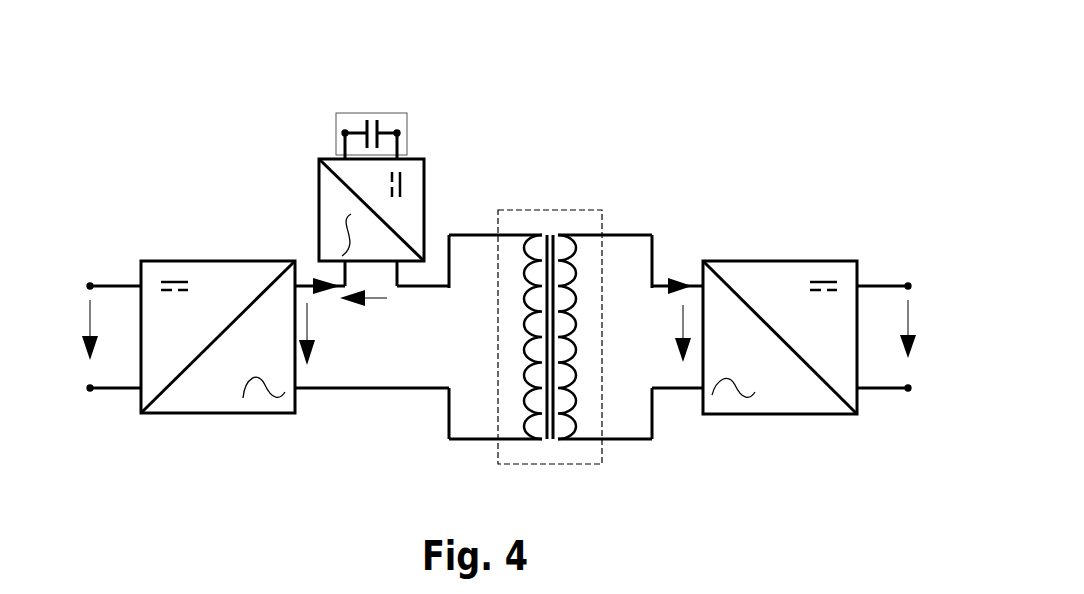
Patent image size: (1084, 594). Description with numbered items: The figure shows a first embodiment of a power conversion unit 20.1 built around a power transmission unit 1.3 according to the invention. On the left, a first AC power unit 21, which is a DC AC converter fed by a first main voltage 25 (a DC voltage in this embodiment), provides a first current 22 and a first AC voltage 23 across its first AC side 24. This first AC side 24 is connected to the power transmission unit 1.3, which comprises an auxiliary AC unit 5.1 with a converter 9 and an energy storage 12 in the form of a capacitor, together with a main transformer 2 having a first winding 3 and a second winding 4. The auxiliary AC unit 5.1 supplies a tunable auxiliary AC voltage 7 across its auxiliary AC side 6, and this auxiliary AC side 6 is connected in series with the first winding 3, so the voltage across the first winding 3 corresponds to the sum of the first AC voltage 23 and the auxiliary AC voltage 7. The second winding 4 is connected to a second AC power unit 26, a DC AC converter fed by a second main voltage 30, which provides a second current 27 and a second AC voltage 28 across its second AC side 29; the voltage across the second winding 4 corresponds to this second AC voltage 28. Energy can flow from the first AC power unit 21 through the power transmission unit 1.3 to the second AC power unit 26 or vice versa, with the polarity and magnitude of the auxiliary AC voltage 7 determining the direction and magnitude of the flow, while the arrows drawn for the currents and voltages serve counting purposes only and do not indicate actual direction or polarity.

The power transmission unit 1.3 is at (303, 116).
The main transformer 2 is at (548, 210).
The first winding 3 is at (530, 439).
The second winding 4 is at (568, 439).
The auxiliary AC unit 5.1 is at (300, 162).
The auxiliary AC side 6 is at (387, 277).
The auxiliary AC voltage 7 is at (372, 305).
The converter 9 is at (424, 205).
The energy storage 12 is at (397, 133).
The power conversion unit 20.1 is at (718, 84).
The first AC power unit 21 is at (208, 258).
The first current 22 is at (317, 282).
The first AC voltage 23 is at (308, 358).
The first AC side 24 is at (250, 398).
The first main voltage 25 is at (85, 360).
The second AC power unit 26 is at (770, 261).
The second current 27 is at (675, 277).
The second AC voltage 28 is at (683, 362).
The second AC side 29 is at (722, 405).
The second main voltage 30 is at (912, 358).